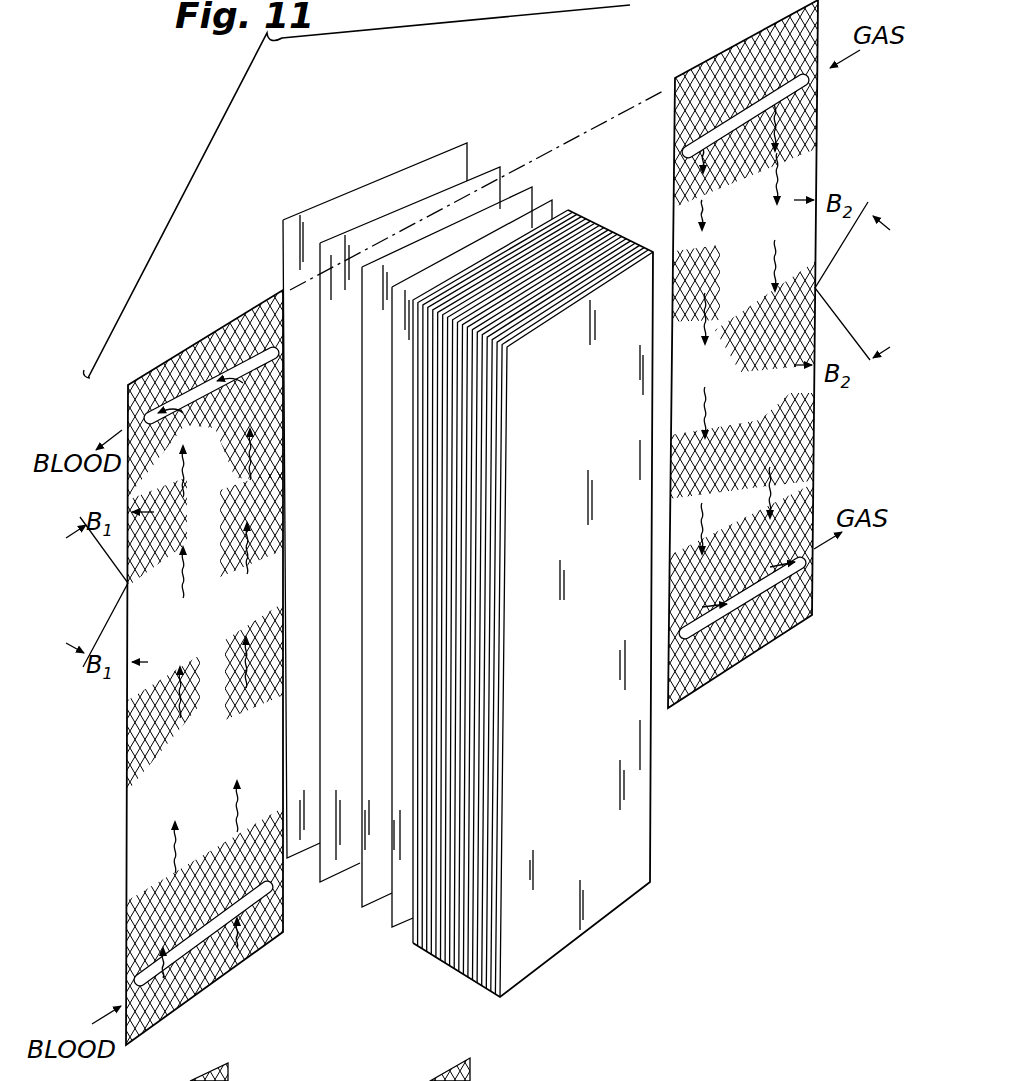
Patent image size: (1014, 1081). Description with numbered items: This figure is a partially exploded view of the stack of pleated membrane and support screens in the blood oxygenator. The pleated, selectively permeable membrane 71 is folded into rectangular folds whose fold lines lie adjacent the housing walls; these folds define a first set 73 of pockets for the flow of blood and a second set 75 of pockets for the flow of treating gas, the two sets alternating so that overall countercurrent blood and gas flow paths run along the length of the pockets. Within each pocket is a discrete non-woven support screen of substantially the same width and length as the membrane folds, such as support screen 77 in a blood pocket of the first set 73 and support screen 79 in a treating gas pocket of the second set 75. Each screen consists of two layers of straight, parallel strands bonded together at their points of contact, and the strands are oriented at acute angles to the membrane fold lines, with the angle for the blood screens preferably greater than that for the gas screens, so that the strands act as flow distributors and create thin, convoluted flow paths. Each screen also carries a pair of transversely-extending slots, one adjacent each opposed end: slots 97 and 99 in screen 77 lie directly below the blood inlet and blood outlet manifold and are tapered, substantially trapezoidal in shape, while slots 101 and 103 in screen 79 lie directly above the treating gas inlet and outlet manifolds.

The pleated selectively permeable membrane 71 is at (316, 216).
The first set of pockets 73 is at (410, 945).
The second set of pockets 75 is at (567, 207).
The support screen 77 is at (236, 623).
The support screen 79 is at (760, 271).
The slot 97 is at (181, 397).
The slot 99 is at (193, 942).
The slot 101 is at (787, 88).
The slot 103 is at (767, 580).